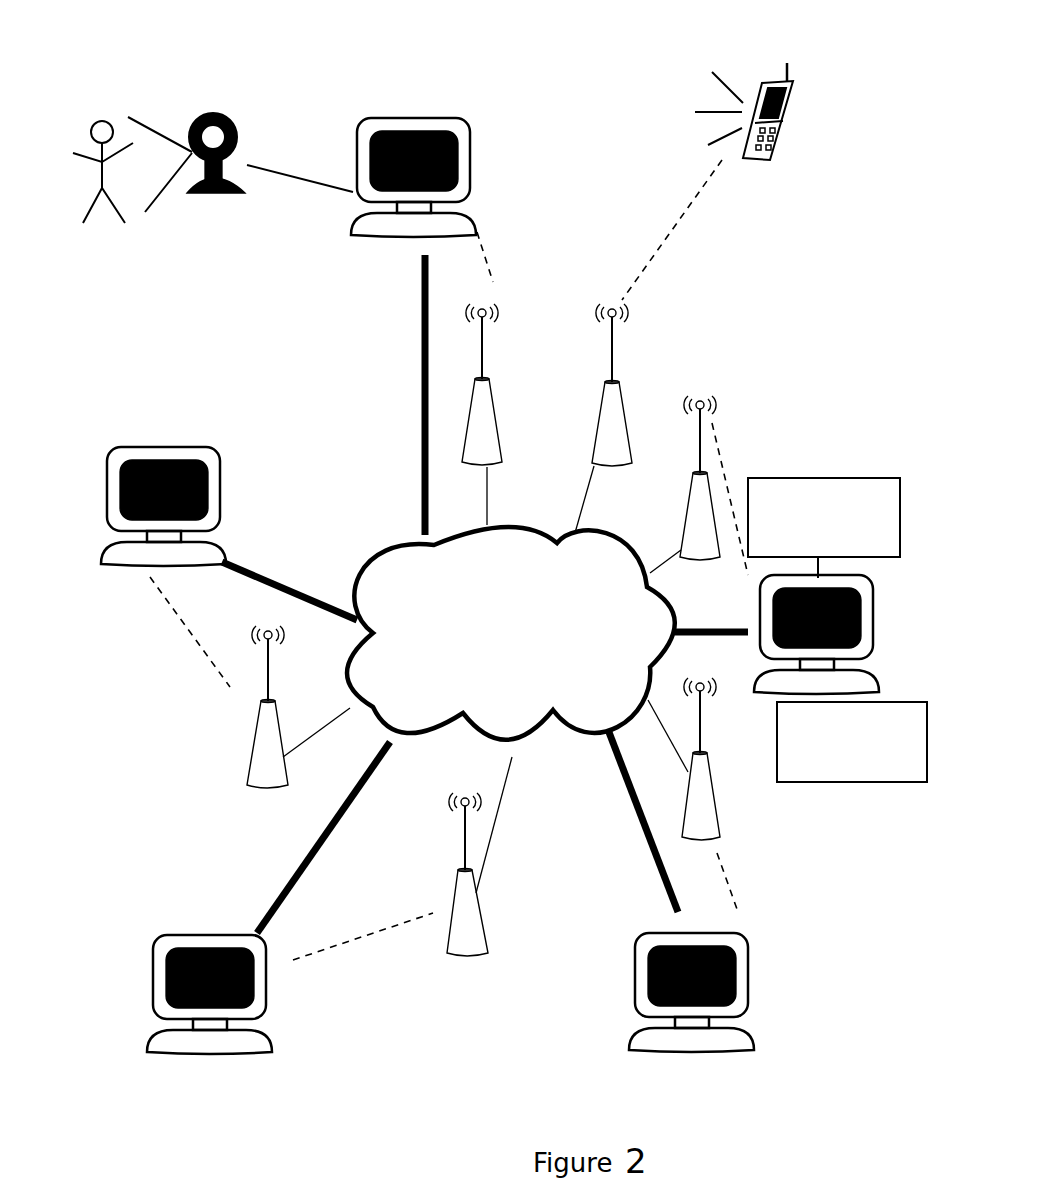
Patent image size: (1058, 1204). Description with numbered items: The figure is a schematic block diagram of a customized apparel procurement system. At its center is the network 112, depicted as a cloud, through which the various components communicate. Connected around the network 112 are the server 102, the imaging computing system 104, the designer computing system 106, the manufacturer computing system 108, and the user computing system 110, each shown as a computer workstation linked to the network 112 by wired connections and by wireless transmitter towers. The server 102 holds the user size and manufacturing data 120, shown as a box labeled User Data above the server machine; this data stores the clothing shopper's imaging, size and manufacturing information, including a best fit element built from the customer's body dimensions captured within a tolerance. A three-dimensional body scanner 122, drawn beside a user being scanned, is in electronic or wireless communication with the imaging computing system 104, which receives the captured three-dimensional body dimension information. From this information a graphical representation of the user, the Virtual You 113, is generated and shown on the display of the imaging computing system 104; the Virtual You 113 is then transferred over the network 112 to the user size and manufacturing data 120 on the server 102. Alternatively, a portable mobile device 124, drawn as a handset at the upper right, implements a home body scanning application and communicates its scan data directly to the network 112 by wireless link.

The server 102 is at (760, 700).
The imaging computing system 104 is at (464, 131).
The designer computing system 106 is at (168, 428).
The manufacturer computing system 108 is at (278, 1058).
The user computing system 110 is at (763, 985).
The network 112 is at (612, 572).
The Virtual You 113 is at (466, 155).
The user size and manufacturing data 120 is at (840, 470).
The 3D body scanner 122 is at (247, 137).
The portable mobile device 124 is at (775, 177).